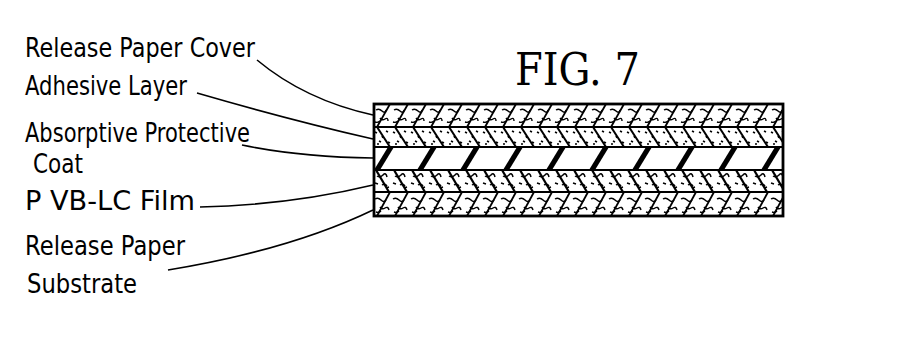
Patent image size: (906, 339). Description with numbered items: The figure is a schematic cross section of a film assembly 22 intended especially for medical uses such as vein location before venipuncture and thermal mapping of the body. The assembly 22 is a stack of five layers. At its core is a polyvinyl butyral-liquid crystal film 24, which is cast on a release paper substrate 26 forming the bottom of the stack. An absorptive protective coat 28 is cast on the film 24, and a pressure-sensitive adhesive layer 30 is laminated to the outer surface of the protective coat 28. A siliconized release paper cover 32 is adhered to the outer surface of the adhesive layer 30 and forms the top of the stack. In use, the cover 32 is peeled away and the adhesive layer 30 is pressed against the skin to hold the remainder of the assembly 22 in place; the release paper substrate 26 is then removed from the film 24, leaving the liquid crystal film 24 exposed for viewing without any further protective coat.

The film assembly 22 is at (674, 95).
The release paper cover 32 is at (784, 116).
The adhesive layer 30 is at (784, 137).
The absorptive protective coat 28 is at (784, 160).
The polyvinyl butyral-liquid crystal film 24 is at (784, 183).
The release paper substrate 26 is at (784, 213).